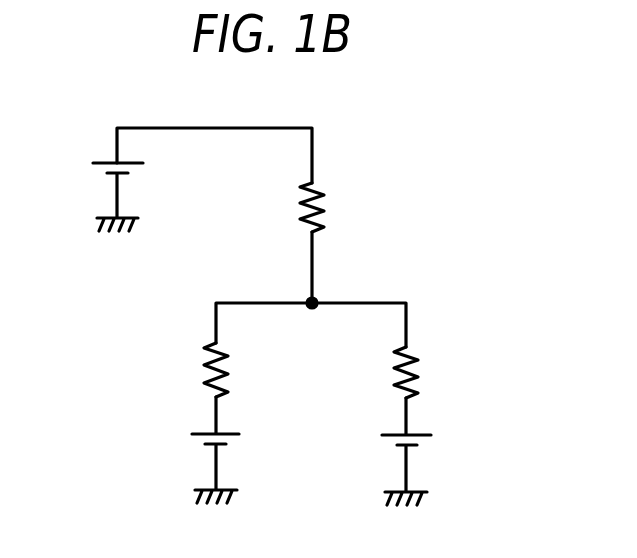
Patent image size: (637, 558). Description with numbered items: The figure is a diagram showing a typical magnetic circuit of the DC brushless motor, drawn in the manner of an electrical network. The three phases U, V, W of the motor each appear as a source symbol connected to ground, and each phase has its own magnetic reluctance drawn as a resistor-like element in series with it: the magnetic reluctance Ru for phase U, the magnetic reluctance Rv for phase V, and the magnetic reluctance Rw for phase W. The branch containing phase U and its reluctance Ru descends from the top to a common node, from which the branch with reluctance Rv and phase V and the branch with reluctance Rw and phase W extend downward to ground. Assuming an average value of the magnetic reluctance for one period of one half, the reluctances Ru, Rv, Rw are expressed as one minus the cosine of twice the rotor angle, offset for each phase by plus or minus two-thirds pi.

The phase U is at (102, 192).
The phase V is at (201, 450).
The phase W is at (426, 451).
The magnetic reluctance of phase U Ru is at (333, 207).
The magnetic reluctance of phase V Rv is at (193, 370).
The magnetic reluctance of phase W Rw is at (432, 372).